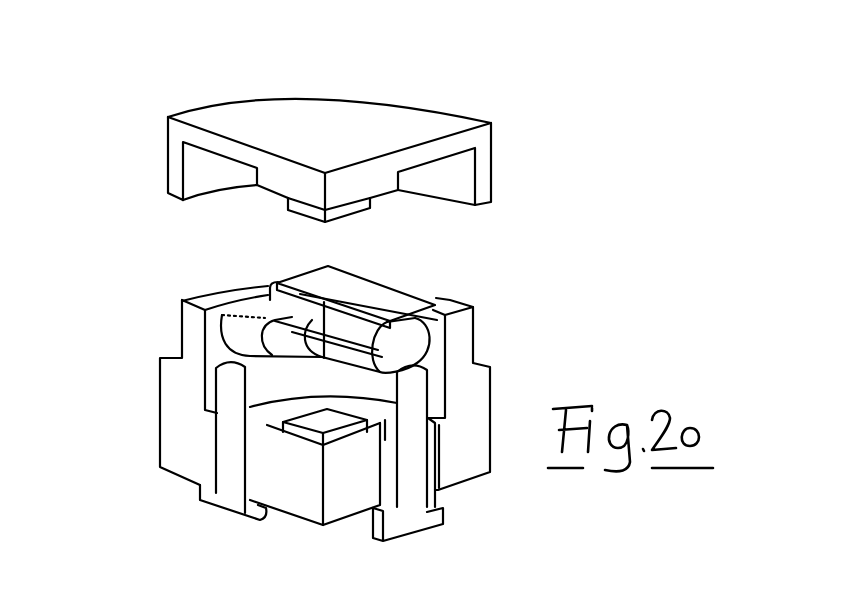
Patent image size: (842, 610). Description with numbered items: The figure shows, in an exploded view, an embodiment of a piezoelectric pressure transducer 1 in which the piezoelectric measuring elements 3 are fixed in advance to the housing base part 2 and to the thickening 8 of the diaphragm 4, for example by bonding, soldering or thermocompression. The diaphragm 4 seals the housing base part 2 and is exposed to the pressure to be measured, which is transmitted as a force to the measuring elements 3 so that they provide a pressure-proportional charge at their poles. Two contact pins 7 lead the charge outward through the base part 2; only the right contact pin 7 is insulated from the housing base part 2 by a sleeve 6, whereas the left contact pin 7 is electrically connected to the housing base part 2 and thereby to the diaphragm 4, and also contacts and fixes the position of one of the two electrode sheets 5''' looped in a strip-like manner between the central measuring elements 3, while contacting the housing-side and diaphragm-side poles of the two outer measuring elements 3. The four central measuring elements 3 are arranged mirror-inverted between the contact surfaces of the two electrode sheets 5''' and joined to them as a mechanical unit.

The piezoelectric pressure transducer 1 is at (500, 326).
The housing base part 2 is at (295, 495).
The piezoelectric measuring element 3 is at (338, 590).
The diaphragm 4 is at (462, 143).
The electrode sheet 5''' is at (304, 340).
The sleeve 6 is at (433, 455).
The contact pin 7 is at (457, 596).
The thickening of the diaphragm 8 is at (280, 175).